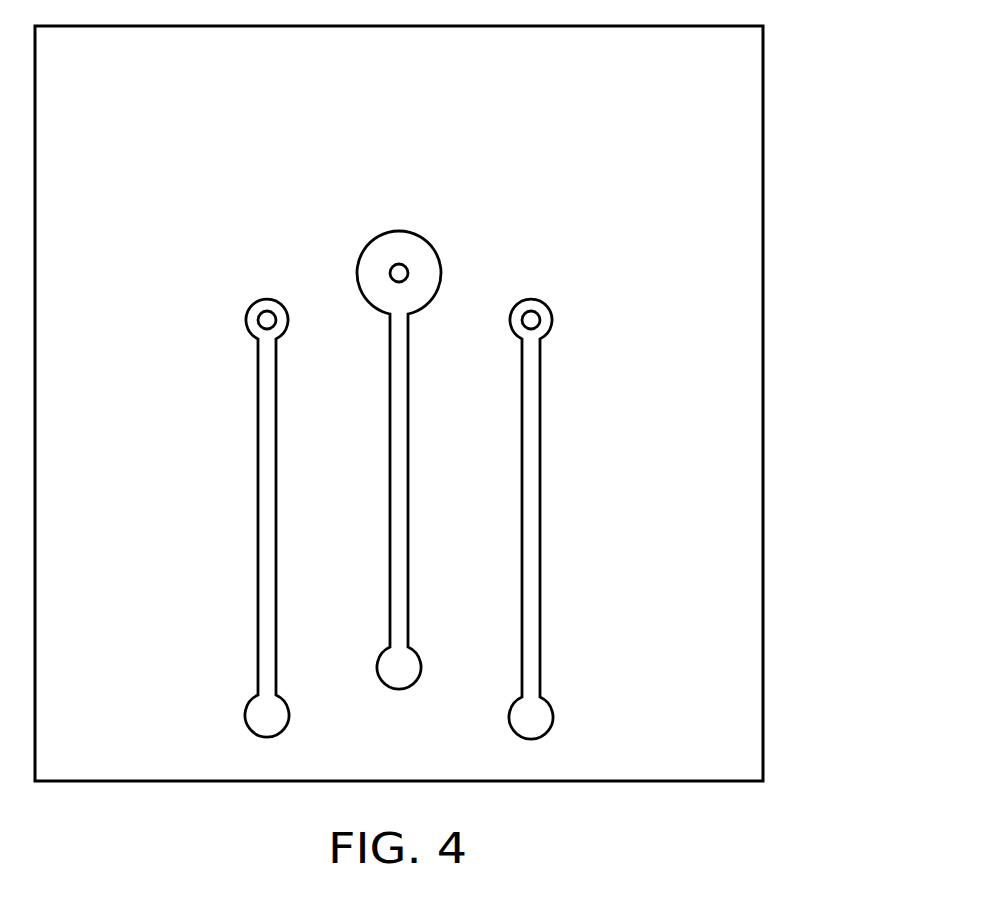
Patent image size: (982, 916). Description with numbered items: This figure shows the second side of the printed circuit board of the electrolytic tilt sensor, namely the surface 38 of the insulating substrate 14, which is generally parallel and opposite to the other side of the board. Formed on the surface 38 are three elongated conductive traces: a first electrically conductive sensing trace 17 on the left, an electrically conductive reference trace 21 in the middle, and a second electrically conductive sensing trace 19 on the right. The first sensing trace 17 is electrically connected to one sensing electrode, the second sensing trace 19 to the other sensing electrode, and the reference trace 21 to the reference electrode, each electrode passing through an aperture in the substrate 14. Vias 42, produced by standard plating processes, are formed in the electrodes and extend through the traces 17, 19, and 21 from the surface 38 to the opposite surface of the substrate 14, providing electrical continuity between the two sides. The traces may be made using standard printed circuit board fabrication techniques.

The insulating substrate 14 is at (763, 128).
The first electrically conductive sensing trace 17 is at (258, 440).
The second electrically conductive sensing trace 19 is at (540, 440).
The electrically conductive reference trace 21 is at (408, 440).
The surface 38 is at (714, 733).
The vias 42 is at (267, 311).